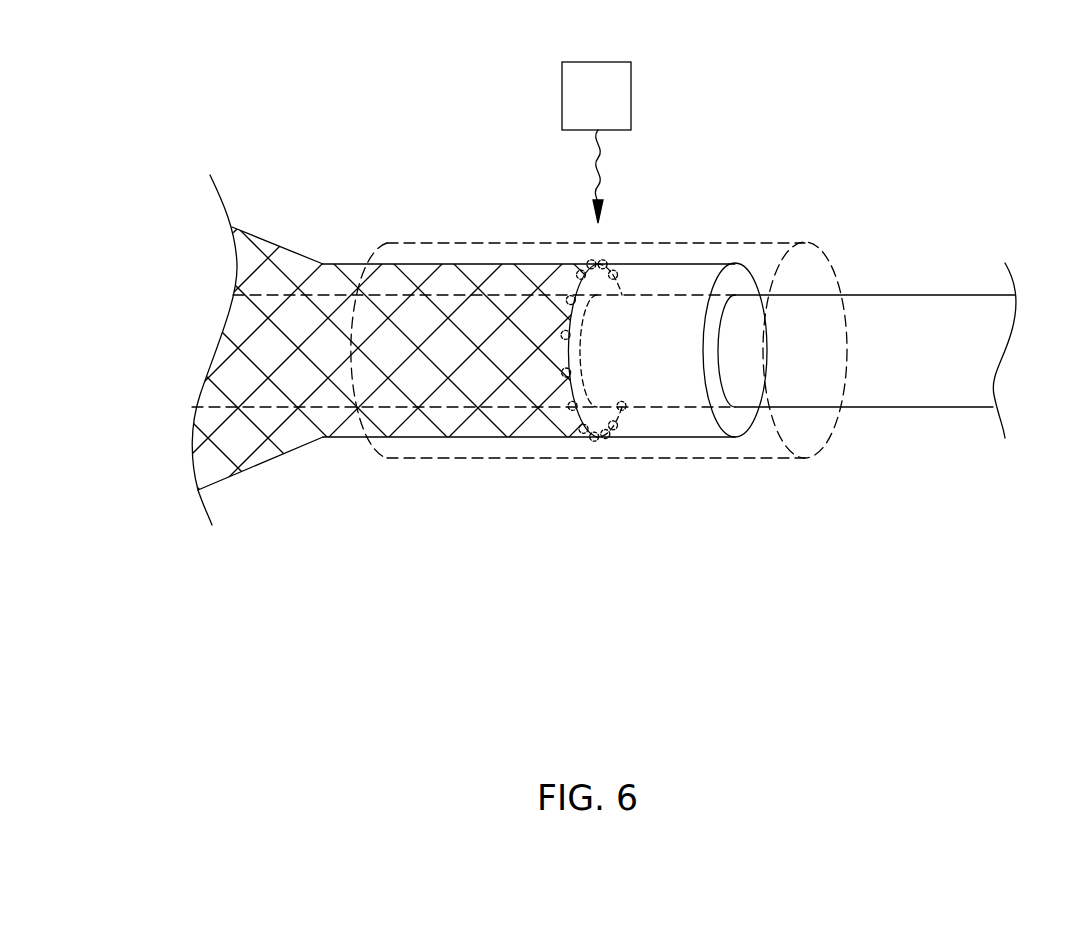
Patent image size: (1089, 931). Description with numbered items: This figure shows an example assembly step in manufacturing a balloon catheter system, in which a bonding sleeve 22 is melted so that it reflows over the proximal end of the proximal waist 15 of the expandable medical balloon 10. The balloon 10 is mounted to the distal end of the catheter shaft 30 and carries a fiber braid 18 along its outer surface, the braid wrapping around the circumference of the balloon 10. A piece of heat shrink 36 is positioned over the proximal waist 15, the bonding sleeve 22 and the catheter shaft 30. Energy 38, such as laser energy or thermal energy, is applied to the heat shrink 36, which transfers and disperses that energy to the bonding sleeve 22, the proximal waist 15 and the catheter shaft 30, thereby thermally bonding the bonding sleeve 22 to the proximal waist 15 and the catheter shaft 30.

The expandable medical balloon 10 is at (368, 163).
The proximal waist portion 15 is at (443, 447).
The fiber braid 18 is at (252, 225).
The bonding sleeve 22 is at (652, 277).
The catheter shaft 30 is at (893, 303).
The heat shrink 36 is at (740, 243).
The energy 38 is at (615, 160).